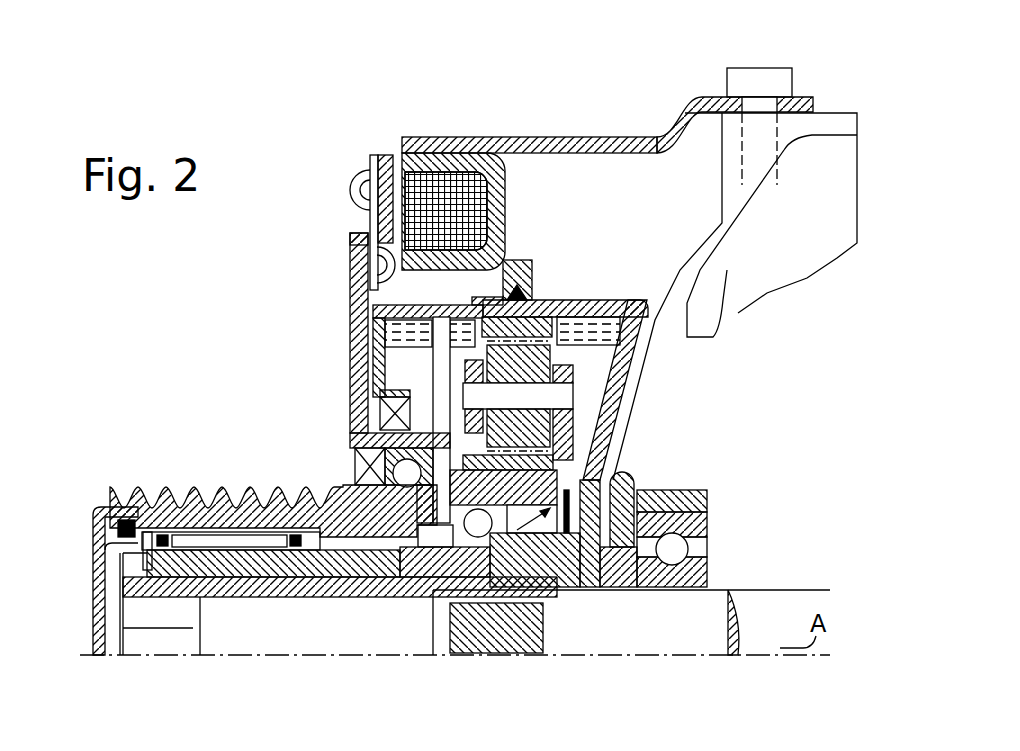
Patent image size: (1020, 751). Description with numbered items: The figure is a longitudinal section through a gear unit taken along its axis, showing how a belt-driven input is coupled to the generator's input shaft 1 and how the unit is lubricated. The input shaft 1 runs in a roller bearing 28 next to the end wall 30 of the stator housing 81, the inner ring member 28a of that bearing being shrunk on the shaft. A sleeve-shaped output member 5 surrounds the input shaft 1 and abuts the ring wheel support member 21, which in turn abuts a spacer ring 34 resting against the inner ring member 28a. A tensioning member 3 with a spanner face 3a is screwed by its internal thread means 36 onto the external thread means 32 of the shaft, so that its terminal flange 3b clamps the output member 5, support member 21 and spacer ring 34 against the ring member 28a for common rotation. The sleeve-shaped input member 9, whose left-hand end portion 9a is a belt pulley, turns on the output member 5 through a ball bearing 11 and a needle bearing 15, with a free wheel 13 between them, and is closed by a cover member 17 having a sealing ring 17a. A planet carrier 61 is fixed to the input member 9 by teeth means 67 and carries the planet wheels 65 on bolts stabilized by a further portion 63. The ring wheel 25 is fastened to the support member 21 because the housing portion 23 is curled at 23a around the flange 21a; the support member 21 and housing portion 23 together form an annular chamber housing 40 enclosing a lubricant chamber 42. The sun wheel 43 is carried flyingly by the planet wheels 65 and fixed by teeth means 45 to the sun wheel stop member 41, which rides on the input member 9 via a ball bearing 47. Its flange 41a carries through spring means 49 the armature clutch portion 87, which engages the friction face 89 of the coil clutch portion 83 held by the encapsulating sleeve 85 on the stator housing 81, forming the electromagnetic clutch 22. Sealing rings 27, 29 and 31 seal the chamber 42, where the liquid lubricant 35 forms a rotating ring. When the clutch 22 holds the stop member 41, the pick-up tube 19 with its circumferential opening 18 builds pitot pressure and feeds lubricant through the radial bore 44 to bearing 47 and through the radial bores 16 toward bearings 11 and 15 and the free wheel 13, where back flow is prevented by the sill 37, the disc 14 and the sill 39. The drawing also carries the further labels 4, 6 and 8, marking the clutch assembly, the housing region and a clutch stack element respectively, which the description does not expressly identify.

The input shaft 1 is at (700, 630).
The tensioning member 3 is at (218, 600).
The spanner face 3a is at (142, 637).
The terminal flange 3b is at (120, 555).
The electromagnet 4 is at (586, 130).
The output member 5 is at (392, 560).
The housing 6 is at (835, 108).
The clutch element 8 is at (575, 395).
The input member 9 is at (340, 555).
The left-hand end portion of the input member 9a is at (160, 495).
The ball bearing 11 is at (500, 620).
The free wheel 13 is at (560, 560).
The disc 14 is at (640, 478).
The needle bearing 15 is at (215, 540).
The radial bores 16 is at (425, 590).
The cover member 17 is at (95, 600).
The sealing ring 17a is at (110, 500).
The opening 18 is at (397, 275).
The lubricant pick-up tube 19 is at (440, 355).
The ring wheel support member 21 is at (708, 337).
The flange 21a is at (530, 260).
The clutch 22 is at (452, 140).
The housing portion 23 is at (385, 305).
The curled portion 23a is at (518, 260).
The ring wheel 25 is at (540, 297).
The sealing ring 27 is at (535, 290).
The roller bearing 28 is at (708, 527).
The inner ring member 28a is at (708, 567).
The sealing ring 29 is at (410, 373).
The end wall 30 is at (680, 277).
The rotatable sealing ring 31 is at (393, 475).
The external thread means 32 is at (470, 565).
The spacer ring 34 is at (622, 590).
The liquid lubricant / lubricant ring 35 is at (400, 327).
The terminal flange / internal thread means 36 is at (520, 615).
The sill 37 is at (355, 565).
The sill 39 is at (462, 528).
The annular chamber housing 40 is at (640, 297).
The sun wheel stop member 41 is at (358, 430).
The radially outwards extending flange 41a is at (350, 240).
The annular lubricant chamber 42 is at (585, 350).
The sun wheel 43 is at (575, 440).
The radial bore 44 is at (390, 432).
The teeth means 45 is at (518, 396).
The ball bearing 47 is at (360, 458).
The axially deflectable spring means 49 is at (370, 165).
The planet carrier 61 is at (575, 420).
The further portion of the planet carrier 63 is at (385, 385).
The planet wheels 65 is at (575, 378).
The teeth means 67 is at (590, 462).
The stator housing 81 is at (730, 132).
The clutch portion comprising the electromagnetic coil 83 is at (475, 180).
The encapsulating sleeve 85 is at (622, 140).
The clutch portion provided with the armature 87 is at (388, 223).
The friction face 89 is at (385, 155).